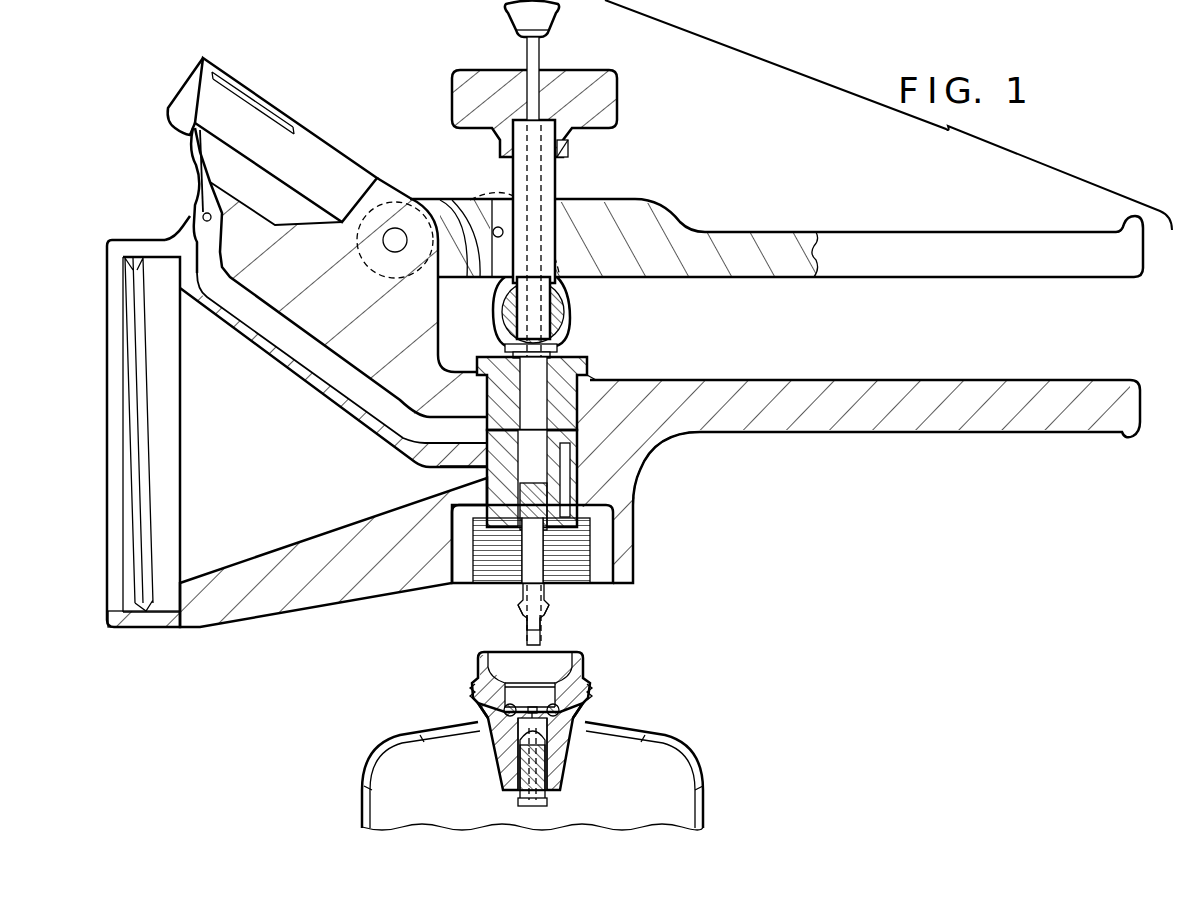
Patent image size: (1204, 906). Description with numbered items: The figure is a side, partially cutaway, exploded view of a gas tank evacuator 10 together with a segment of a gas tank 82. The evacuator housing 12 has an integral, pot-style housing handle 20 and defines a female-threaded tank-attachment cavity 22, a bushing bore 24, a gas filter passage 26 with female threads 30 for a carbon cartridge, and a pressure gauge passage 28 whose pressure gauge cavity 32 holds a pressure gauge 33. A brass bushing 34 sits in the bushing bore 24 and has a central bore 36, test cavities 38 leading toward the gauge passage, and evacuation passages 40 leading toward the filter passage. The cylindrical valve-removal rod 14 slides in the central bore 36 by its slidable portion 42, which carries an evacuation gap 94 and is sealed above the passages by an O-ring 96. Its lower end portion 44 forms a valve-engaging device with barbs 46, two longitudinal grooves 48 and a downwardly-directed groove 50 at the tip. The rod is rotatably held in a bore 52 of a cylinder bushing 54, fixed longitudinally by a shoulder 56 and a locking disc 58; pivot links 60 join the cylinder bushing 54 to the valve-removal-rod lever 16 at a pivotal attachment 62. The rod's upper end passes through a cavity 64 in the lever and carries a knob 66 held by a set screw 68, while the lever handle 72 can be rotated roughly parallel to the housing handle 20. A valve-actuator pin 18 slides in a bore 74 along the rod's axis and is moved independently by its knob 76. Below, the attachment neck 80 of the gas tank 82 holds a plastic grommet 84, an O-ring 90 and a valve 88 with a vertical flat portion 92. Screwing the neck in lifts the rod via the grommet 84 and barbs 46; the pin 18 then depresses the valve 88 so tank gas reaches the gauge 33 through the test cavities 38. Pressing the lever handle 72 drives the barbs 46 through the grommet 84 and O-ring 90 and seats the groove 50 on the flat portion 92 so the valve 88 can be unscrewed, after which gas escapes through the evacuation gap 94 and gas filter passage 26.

The gas tank evacuator 10 is at (703, 200).
The evacuator housing 12 is at (308, 296).
The valve-removal rod 14 is at (548, 178).
The valve-removal-rod lever 16 is at (668, 264).
The valve-actuator pin 18 is at (535, 58).
The housing handle 20 is at (940, 420).
The tank-attachment cavity 22 is at (573, 575).
The bushing bore 24 is at (598, 380).
The gas filter passage 26 is at (260, 548).
The pressure gauge passage 28 is at (203, 216).
The female threads 30 is at (148, 418).
The pressure gauge cavity 32 is at (238, 87).
The pressure gauge 33 is at (283, 112).
The bushing 34 is at (590, 365).
The central bore 36 is at (470, 385).
The test cavities 38 is at (462, 392).
The evacuation passages 40 is at (483, 482).
The slidable portion 42 is at (440, 466).
The lower end portion 44 is at (518, 590).
The barbs 46 is at (520, 606).
The longitudinal grooves 48 is at (520, 620).
The downwardly-directed groove 50 is at (540, 632).
The bore 52 is at (572, 312).
The cylinder bushing 54 is at (572, 332).
The shoulder 56 is at (500, 290).
The locking disc 58 is at (500, 327).
The pivot links 60 is at (560, 293).
The pivotal attachment 62 is at (470, 218).
The cavity 64 is at (565, 212).
The knob 66 is at (615, 96).
The set screw 68 is at (568, 147).
The lever handle 72 is at (1025, 242).
The bore 74 is at (520, 185).
The knob 76 is at (543, 20).
The attachment neck 80 is at (598, 697).
The gas tank 82 is at (708, 785).
The plastic grommet 84 is at (480, 718).
The valve 88 is at (548, 768).
The O-ring 90 is at (570, 712).
The vertical flat portion 92 is at (482, 748).
The evacuation gap 94 is at (600, 505).
The O-ring 96 is at (598, 405).